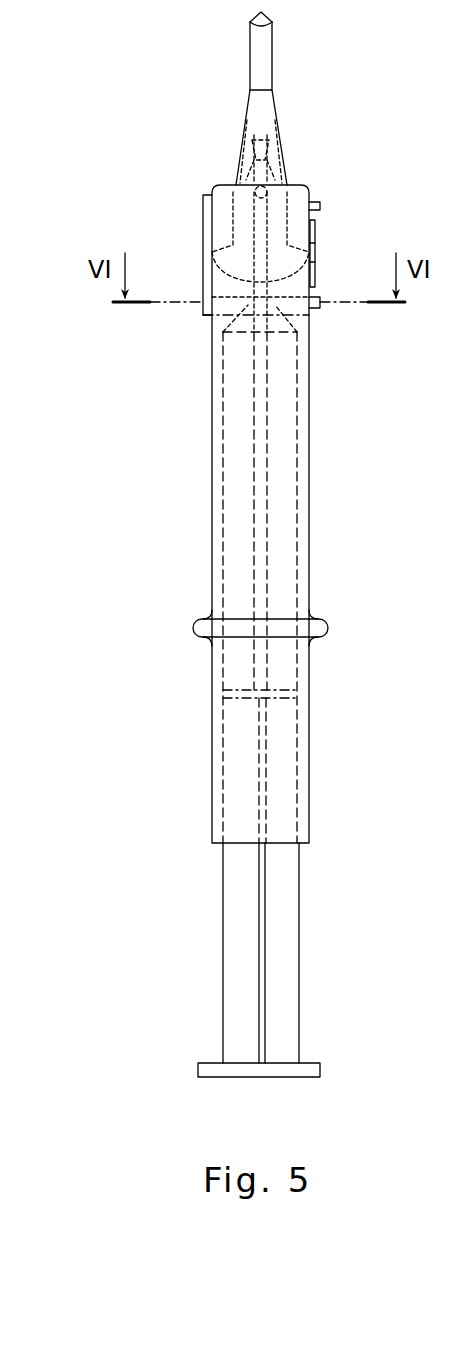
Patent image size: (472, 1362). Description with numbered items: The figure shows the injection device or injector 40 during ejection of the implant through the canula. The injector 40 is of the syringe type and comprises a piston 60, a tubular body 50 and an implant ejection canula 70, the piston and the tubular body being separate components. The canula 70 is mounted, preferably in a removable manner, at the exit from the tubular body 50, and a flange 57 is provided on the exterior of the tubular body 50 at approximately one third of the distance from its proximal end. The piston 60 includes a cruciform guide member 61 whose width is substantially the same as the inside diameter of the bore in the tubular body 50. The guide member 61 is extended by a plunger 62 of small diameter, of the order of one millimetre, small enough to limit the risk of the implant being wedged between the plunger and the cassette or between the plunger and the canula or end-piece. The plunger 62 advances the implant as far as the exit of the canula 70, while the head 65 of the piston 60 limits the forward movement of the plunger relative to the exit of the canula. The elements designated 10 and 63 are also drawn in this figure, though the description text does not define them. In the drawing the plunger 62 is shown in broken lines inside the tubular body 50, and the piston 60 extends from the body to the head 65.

The needle assembly 10 is at (235, 165).
The injection device 40 is at (163, 578).
The tubular body 50 is at (312, 532).
The flange 57 is at (325, 628).
The piston 60 is at (268, 934).
The cruciform guide member 61 is at (288, 1010).
The plunger 62 is at (258, 415).
The sleeve wall 63 is at (233, 970).
The head 65 is at (300, 1078).
The implant ejection canula 70 is at (276, 118).